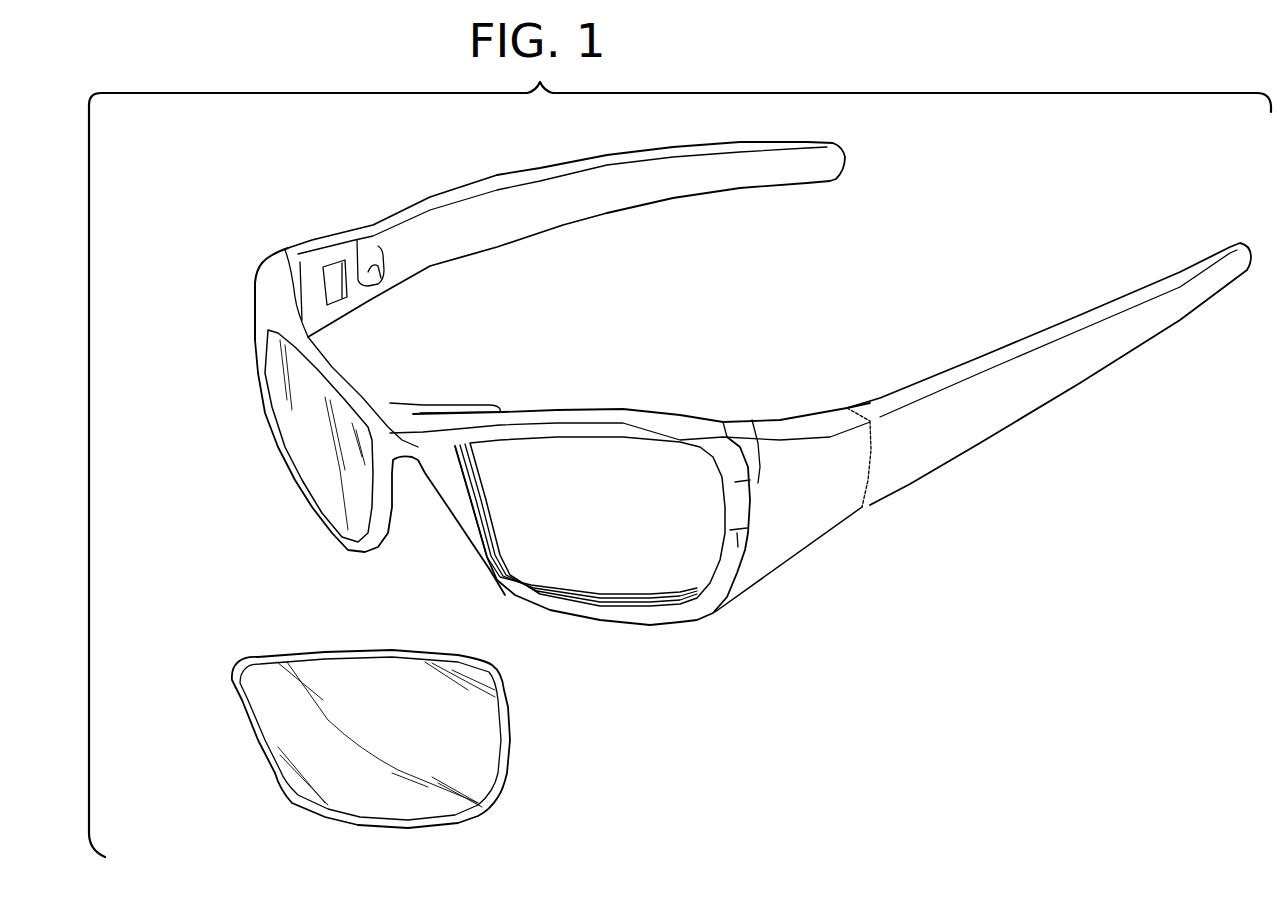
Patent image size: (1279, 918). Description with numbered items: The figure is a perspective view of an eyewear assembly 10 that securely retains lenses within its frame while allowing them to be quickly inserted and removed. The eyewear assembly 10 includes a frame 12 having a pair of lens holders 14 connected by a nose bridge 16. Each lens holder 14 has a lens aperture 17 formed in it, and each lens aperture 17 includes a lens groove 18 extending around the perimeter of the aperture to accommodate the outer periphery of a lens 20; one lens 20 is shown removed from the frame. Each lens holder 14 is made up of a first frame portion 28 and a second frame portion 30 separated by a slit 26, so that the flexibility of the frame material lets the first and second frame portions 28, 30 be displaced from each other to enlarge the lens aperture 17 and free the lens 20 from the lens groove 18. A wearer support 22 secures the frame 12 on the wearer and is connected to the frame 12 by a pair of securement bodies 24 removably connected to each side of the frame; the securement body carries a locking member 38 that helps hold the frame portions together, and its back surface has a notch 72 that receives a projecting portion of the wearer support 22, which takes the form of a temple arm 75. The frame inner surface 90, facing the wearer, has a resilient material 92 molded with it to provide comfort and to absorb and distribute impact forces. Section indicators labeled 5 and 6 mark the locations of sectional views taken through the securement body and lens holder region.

The eyewear assembly 10 is at (290, 192).
The frame 12 is at (270, 272).
The lens holders 14 is at (332, 367).
The nose bridge 16 is at (410, 433).
The lens apertures 17 is at (540, 522).
The lens groove 18 is at (520, 587).
The lens 20 is at (313, 437).
The wearer support 22 is at (965, 377).
The securement bodies 24 is at (792, 432).
The slit 26 is at (745, 550).
The first frame portion 28 is at (752, 420).
The second frame portion 30 is at (718, 583).
The locking member 38 is at (395, 235).
The notch 72 is at (390, 268).
The temple arm 75 is at (1013, 395).
The frame inner surface 90 is at (673, 410).
The resilient material 92 is at (460, 405).
The section line 5- 5 is at (440, 253).
The section line 6- 6 is at (333, 197).